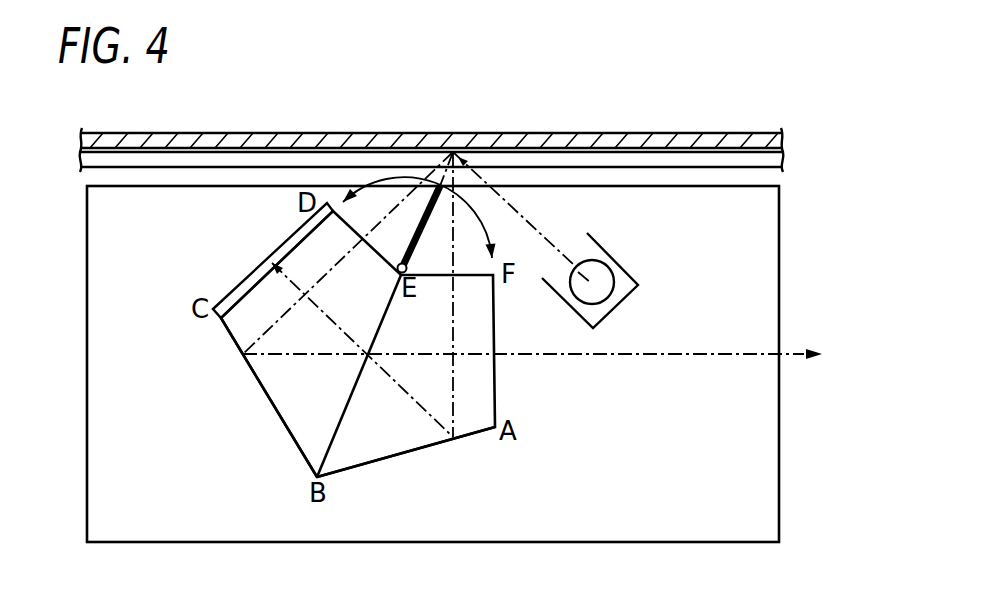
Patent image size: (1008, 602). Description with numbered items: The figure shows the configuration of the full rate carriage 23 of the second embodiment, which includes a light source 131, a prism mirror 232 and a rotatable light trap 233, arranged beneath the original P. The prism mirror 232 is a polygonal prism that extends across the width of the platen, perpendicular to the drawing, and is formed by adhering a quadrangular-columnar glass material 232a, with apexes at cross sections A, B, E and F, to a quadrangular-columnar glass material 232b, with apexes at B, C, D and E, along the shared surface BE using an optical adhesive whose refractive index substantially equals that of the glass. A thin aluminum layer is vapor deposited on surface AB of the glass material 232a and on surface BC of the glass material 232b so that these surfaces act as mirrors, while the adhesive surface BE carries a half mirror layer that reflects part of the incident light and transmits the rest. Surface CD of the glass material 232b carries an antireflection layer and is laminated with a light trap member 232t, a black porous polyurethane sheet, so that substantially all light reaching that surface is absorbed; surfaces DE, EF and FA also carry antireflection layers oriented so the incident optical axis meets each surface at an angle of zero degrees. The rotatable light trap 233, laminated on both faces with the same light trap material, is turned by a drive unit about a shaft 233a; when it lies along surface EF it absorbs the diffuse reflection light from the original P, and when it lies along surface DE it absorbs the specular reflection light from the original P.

The original P is at (598, 132).
The full rate carriage 23 is at (798, 286).
The light source 131 is at (615, 258).
The prism mirror 232 is at (195, 373).
The quadrangular-columnar glass material 232a is at (403, 442).
The quadrangular-columnar glass material 232b is at (287, 412).
The light trap member 232t is at (247, 277).
The rotatable light trap 233 is at (421, 212).
The shaft 233a is at (397, 270).